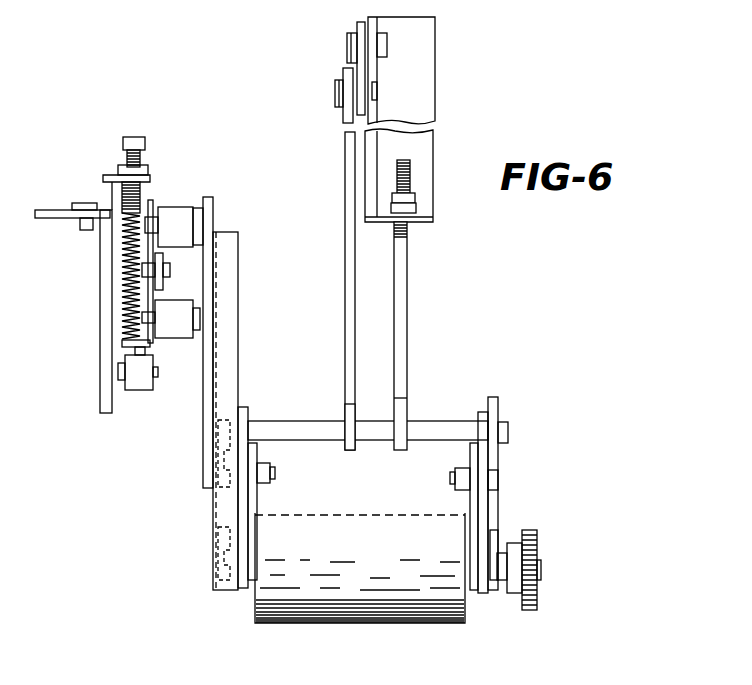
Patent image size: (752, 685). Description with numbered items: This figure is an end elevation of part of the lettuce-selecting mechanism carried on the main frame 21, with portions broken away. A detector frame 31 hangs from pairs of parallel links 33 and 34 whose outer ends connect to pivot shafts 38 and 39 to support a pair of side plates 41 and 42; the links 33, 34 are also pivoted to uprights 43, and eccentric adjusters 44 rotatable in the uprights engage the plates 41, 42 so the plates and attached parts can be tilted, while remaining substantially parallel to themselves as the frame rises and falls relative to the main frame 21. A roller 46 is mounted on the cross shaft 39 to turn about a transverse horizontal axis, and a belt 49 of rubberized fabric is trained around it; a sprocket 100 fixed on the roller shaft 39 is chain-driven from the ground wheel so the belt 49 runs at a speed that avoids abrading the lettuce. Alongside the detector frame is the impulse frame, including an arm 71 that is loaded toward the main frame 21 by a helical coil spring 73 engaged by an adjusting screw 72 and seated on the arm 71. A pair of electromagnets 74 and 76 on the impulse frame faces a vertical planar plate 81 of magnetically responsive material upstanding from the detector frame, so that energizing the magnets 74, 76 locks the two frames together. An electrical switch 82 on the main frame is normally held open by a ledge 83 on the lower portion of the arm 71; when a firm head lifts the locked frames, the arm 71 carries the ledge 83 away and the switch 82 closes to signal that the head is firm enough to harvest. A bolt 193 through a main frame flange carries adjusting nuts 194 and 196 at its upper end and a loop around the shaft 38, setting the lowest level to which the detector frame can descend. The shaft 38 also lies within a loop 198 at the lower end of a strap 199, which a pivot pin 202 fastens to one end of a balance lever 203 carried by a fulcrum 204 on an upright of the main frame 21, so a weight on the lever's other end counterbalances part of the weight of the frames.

The main frame 21 is at (427, 97).
The detector frame 31 is at (505, 417).
The parallel links 33 is at (228, 447).
The parallel links 34 is at (223, 580).
The pivot shaft 38 is at (443, 431).
The pivot shaft 39 is at (540, 570).
The side plate 41 is at (250, 508).
The side plate 42 is at (462, 508).
The uprights 43 is at (238, 507).
The eccentric adjusters 44 is at (266, 476).
The roller 46 is at (369, 497).
The belt 49 is at (354, 625).
The arm 71 is at (162, 289).
The adjusting screw 72 is at (125, 147).
The helical coil spring 73 is at (122, 263).
The electromagnet 74 is at (175, 213).
The electromagnet 76 is at (173, 330).
The planar plate 81 is at (202, 450).
The electrical switch 82 is at (152, 383).
The ledge 83 is at (122, 350).
The sprocket 100 is at (528, 537).
The bolt 193 is at (403, 313).
The adjusting nut 194 is at (412, 197).
The adjusting nut 196 is at (416, 210).
The loop 198 is at (342, 408).
The strap 199 is at (344, 268).
The pivot pin 202 is at (343, 90).
The balance lever 203 is at (357, 70).
The fulcrum 204 is at (347, 45).